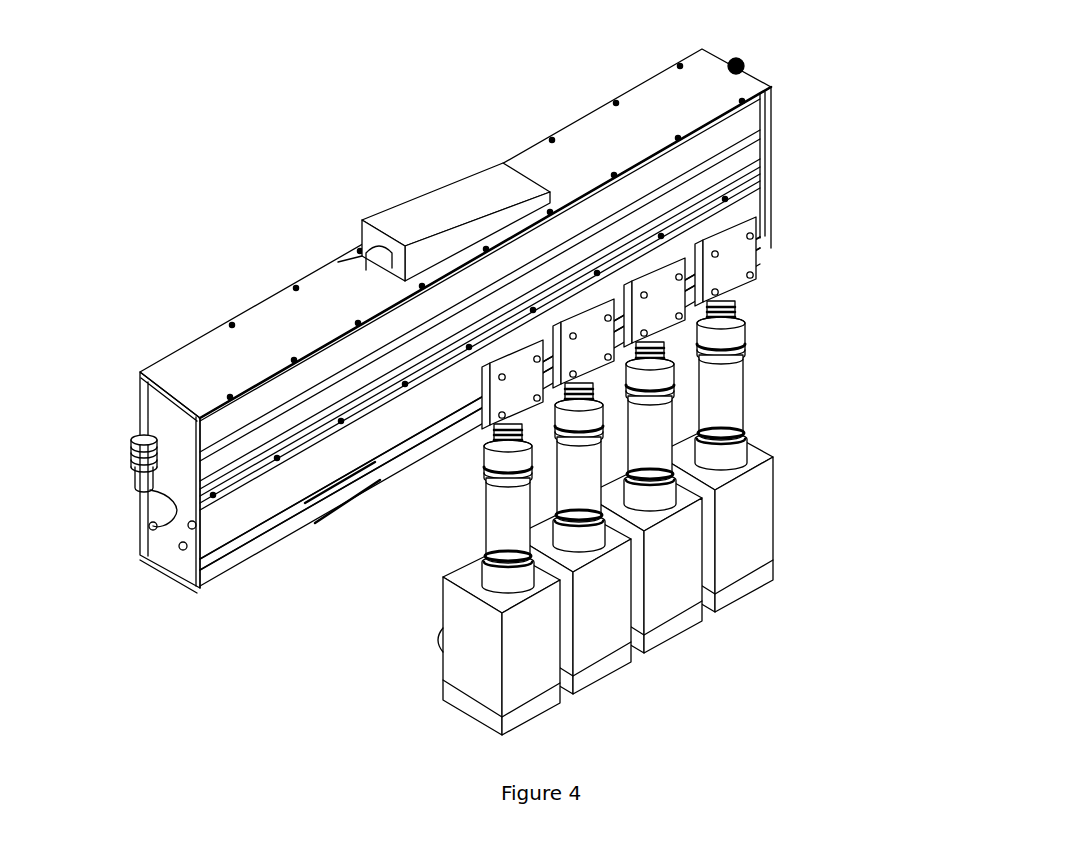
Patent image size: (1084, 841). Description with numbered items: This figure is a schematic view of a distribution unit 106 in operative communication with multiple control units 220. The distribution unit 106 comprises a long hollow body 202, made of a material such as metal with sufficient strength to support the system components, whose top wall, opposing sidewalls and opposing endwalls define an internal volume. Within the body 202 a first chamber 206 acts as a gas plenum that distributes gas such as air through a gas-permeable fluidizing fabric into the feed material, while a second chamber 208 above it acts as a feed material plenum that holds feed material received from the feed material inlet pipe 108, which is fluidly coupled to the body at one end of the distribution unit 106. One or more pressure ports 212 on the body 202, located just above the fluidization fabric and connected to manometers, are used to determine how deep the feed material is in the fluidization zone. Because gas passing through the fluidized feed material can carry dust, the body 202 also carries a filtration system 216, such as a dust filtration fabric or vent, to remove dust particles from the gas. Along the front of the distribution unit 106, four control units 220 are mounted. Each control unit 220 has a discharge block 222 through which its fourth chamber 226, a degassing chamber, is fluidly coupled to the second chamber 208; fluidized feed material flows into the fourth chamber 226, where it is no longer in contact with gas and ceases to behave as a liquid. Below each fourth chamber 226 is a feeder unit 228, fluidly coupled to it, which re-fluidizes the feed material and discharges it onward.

The distribution unit 106 is at (488, 323).
The feed material inlet pipe 108 is at (133, 474).
The body 202 is at (455, 345).
The first chamber 206 is at (416, 451).
The second chamber 208 is at (264, 505).
The pressure port 212 is at (748, 60).
The filtration system 216 is at (420, 213).
The control unit 220 is at (698, 476).
The discharge block 222 is at (745, 261).
The fourth chamber 226 is at (741, 370).
The feeder unit 228 is at (775, 503).